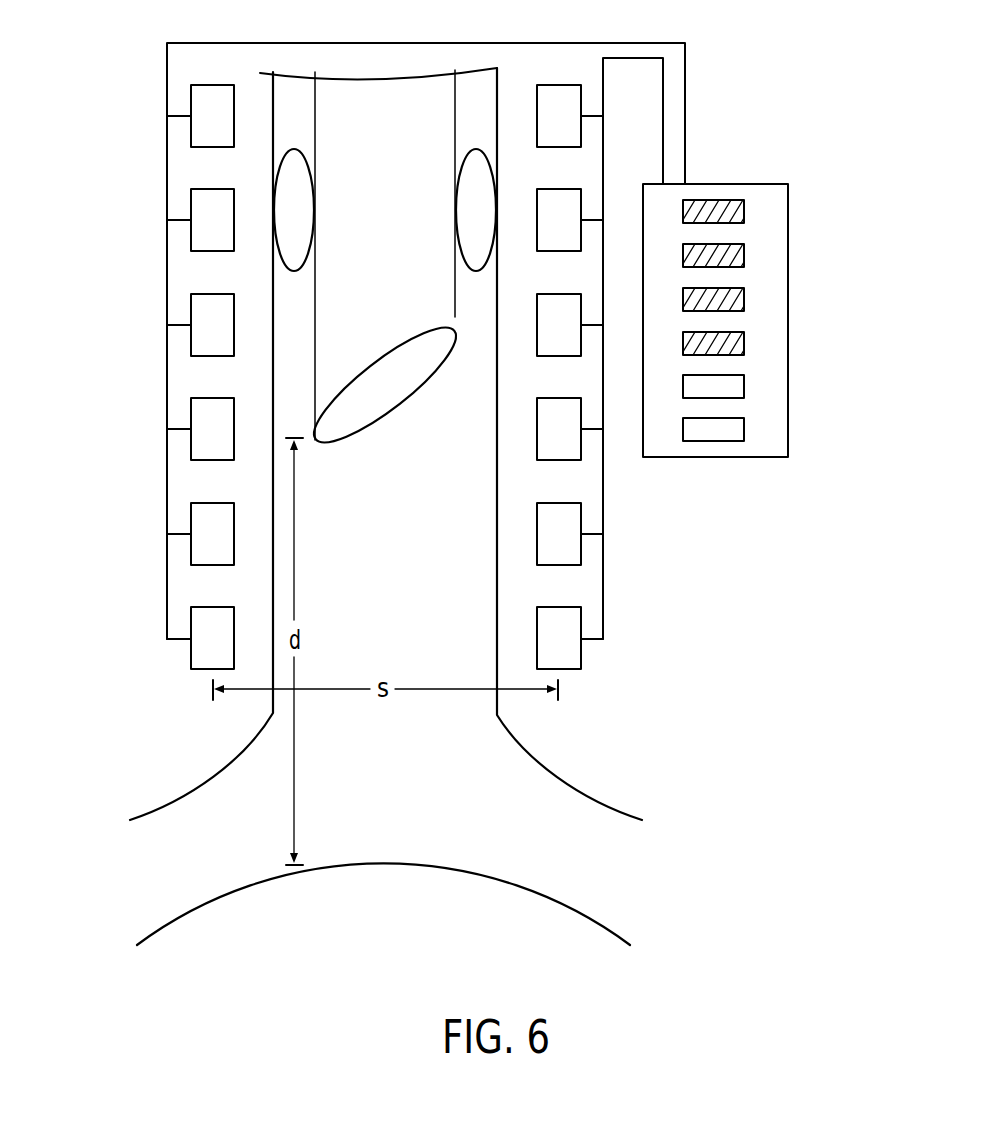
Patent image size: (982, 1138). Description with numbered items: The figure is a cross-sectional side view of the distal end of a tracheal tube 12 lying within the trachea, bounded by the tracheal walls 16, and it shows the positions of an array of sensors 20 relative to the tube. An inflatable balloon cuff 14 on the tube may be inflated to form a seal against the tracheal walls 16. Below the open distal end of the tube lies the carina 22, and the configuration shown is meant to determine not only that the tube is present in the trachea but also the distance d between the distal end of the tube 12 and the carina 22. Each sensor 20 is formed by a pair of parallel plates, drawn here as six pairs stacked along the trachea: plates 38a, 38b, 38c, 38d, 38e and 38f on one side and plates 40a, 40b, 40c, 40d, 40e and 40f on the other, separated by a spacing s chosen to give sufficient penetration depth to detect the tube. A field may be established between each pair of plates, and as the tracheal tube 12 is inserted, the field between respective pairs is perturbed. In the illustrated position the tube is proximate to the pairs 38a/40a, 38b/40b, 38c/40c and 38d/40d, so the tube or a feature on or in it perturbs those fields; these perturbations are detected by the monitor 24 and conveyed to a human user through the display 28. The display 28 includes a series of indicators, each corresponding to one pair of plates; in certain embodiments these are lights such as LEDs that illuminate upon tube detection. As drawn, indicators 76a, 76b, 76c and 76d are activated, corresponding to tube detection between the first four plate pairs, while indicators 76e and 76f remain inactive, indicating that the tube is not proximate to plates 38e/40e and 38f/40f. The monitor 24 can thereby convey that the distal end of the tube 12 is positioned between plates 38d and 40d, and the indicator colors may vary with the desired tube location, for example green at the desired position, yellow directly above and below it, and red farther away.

The sensor 20 is at (129, 82).
The tracheal walls 16 is at (497, 102).
The inflatable balloon cuff 14 is at (303, 207).
The tracheal tube 12 is at (452, 316).
The carina 22 is at (380, 918).
The monitor 24 is at (717, 182).
The display 28 is at (668, 255).
The plate 38a is at (236, 117).
The plate 38b is at (236, 221).
The plate 38c is at (236, 326).
The plate 38d is at (236, 430).
The plate 38e is at (236, 535).
The plate 38f is at (191, 652).
The plate 40a is at (535, 117).
The plate 40b is at (535, 221).
The plate 40c is at (535, 326).
The plate 40d is at (535, 430).
The plate 40e is at (535, 535).
The plate 40f is at (580, 652).
The indicator 76a is at (744, 211).
The indicator 76b is at (744, 255).
The indicator 76c is at (744, 299).
The indicator 76d is at (744, 343).
The indicator 76e is at (744, 386).
The indicator 76f is at (744, 429).